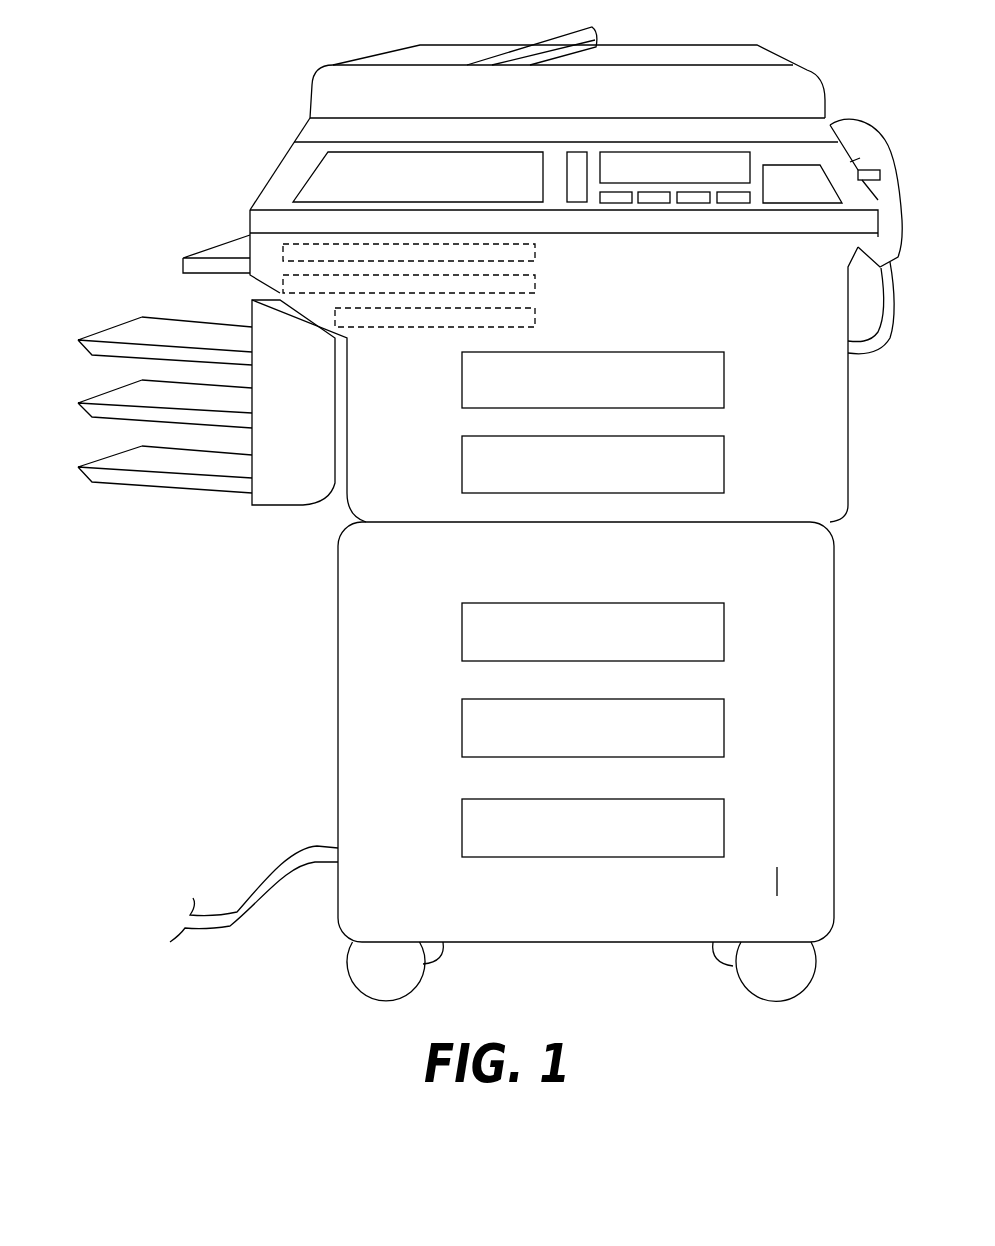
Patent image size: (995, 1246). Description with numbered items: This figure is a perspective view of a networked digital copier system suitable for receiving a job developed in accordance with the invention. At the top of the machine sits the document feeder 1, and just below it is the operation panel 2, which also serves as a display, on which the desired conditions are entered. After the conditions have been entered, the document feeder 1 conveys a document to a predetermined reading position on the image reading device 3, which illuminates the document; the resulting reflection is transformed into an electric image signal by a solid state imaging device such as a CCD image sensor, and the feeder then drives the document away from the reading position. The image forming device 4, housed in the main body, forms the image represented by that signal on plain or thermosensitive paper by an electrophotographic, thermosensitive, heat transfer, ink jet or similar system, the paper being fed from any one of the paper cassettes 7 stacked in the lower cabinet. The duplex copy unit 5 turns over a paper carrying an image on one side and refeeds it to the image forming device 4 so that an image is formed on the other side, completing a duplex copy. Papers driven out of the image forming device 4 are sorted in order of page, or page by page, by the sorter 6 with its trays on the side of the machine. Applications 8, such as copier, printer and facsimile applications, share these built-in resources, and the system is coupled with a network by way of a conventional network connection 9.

The document feeder 1 is at (812, 75).
The operation panel 2 is at (328, 157).
The image reading device 3 is at (258, 180).
The image forming device 4 is at (718, 387).
The duplex copy unit 5 is at (717, 468).
The sorter 6 is at (155, 497).
The paper cassettes 7 is at (718, 632).
The applications 8 is at (545, 284).
The network connection 9 is at (230, 908).